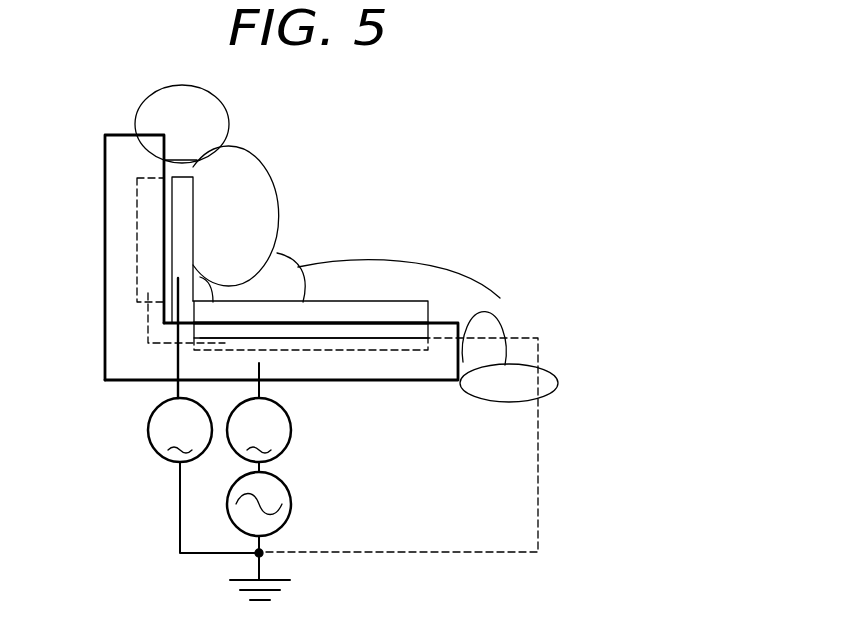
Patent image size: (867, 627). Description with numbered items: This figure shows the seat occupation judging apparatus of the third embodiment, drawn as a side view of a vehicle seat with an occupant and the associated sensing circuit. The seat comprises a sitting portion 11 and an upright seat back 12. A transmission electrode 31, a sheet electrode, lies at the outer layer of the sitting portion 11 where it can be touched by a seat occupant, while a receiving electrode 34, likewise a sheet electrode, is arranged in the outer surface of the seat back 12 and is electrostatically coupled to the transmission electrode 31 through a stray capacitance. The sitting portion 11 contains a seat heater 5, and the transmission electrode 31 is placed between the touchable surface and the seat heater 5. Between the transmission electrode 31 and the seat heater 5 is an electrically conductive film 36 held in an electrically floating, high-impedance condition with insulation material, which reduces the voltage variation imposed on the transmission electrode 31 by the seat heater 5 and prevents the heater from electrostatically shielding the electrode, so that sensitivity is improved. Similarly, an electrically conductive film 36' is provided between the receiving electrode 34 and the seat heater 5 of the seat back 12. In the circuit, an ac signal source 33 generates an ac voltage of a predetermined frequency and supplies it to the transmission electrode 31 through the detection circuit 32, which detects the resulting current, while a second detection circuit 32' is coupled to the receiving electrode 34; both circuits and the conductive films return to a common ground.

The seat heater 5 is at (390, 342).
The sitting portion 11 is at (347, 381).
The seat back 12 is at (105, 193).
The transmission electrode 31 is at (333, 305).
The detection circuit 32 is at (294, 424).
The detection circuit 32' is at (170, 475).
The ac signal source 33 is at (292, 500).
The receiving electrode 34 is at (183, 242).
The electrically conductive film 36 is at (453, 393).
The electrically conductive film 36' is at (129, 288).